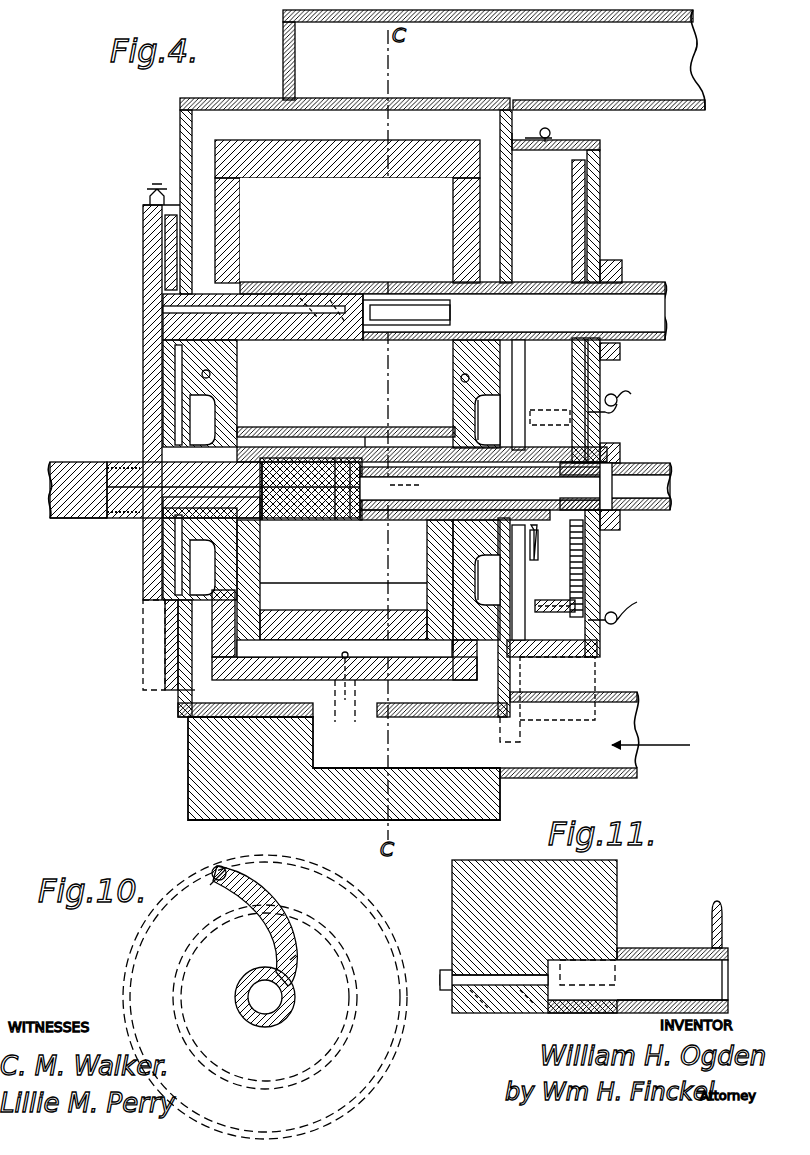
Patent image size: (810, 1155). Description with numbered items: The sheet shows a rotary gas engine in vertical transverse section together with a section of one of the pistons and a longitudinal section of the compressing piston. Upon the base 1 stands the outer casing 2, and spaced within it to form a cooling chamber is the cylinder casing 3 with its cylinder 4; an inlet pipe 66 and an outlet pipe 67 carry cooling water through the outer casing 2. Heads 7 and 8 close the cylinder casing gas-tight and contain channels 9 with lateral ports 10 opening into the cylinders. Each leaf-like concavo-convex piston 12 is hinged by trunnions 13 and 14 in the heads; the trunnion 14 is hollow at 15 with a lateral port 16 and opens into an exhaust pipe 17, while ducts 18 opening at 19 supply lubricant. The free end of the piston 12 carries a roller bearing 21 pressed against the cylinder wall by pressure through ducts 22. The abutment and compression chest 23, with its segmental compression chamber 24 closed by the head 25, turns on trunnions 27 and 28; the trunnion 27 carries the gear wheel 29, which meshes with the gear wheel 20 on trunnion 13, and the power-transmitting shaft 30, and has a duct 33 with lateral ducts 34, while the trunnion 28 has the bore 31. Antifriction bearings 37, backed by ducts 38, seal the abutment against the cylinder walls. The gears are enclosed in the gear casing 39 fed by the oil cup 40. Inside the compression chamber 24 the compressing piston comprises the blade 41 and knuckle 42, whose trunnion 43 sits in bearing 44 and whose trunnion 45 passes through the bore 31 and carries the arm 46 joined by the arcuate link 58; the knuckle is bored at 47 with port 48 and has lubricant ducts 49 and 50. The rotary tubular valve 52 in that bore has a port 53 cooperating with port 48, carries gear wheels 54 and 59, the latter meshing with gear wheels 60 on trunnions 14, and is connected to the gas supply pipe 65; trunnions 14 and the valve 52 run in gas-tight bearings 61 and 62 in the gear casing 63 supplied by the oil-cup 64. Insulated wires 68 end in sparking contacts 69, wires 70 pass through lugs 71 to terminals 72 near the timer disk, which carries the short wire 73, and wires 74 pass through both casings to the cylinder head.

In FIG. 4, the base 1 is at (330, 820).
In FIG. 4, the outer casing 2 is at (180, 127).
In FIG. 4, the cylinder casing 3 is at (322, 143).
In FIG. 4, the cylinder 4 is at (346, 230).
In FIG. 4, the head 7 is at (215, 632).
In FIG. 4, the head 8 is at (470, 235).
In FIG. 4, the channel 9 is at (200, 373).
In FIG. 4, the lateral port 10 is at (165, 394).
In FIG. 4, the leaf-like concavo-convex piston 12 is at (345, 428).
In FIG. 10, the leaf-like concavo-convex piston 12 is at (270, 890).
In FIG. 4, the trunnion 13 is at (175, 302).
In FIG. 4, the trunnion 14 is at (520, 282).
In FIG. 4, the hollow portion 15 is at (514, 313).
In FIG. 10, the hollow portion 15 is at (250, 1000).
In FIG. 4, the lateral port 16 is at (402, 305).
In FIG. 10, the lateral port 16 is at (292, 960).
In FIG. 4, the pipe 17 is at (640, 284).
In FIG. 4, the duct 18 is at (250, 300).
In FIG. 4, the duct opening 19 is at (300, 295).
In FIG. 4, the gear wheel 20 is at (165, 250).
In FIG. 10, the gear wheel 20 is at (265, 1006).
In FIG. 4, the roller bearing 21 is at (310, 438).
In FIG. 10, the roller bearing 21 is at (219, 866).
In FIG. 10, the duct 22 is at (215, 885).
In FIG. 4, the abutment and compression chest 23 is at (245, 590).
In FIG. 4, the segmental compression chamber 24 is at (200, 608).
In FIG. 4, the head 25 is at (578, 598).
In FIG. 4, the trunnion 27 is at (110, 480).
In FIG. 4, the trunnion 28 is at (493, 470).
In FIG. 4, the gear wheel 29 is at (170, 434).
In FIG. 4, the power-transmitting shaft 30 is at (55, 518).
In FIG. 4, the longitudinal channel 31 is at (425, 520).
In FIG. 4, the duct 33 is at (122, 500).
In FIG. 4, the lateral duct 34 is at (150, 468).
In FIG. 4, the antifriction bearing 37 is at (210, 652).
In FIG. 4, the duct 38 is at (344, 645).
In FIG. 4, the gear casing 39 is at (150, 332).
In FIG. 4, the oil cup 40 is at (148, 197).
In FIG. 4, the leaf or blade 41 is at (345, 588).
In FIG. 11, the leaf or blade 41 is at (610, 893).
In FIG. 4, the knuckle 42 is at (320, 520).
In FIG. 11, the knuckle 42 is at (478, 1013).
In FIG. 4, the trunnion 43 is at (275, 520).
In FIG. 11, the trunnion 43 is at (440, 990).
In FIG. 4, the bearing 44 is at (255, 447).
In FIG. 4, the trunnion 45 is at (590, 438).
In FIG. 11, the trunnion 45 is at (672, 1017).
In FIG. 4, the arm 46 is at (538, 550).
In FIG. 11, the arm 46 is at (722, 925).
In FIG. 4, the bore 47 is at (387, 520).
In FIG. 11, the bore 47 is at (638, 980).
In FIG. 4, the lateral port 48 is at (372, 520).
In FIG. 11, the lateral port 48 is at (583, 985).
In FIG. 4, the longitudinal duct 49 is at (340, 520).
In FIG. 11, the longitudinal duct 49 is at (450, 972).
In FIG. 4, the lateral duct 50 is at (360, 448).
In FIG. 11, the lateral duct 50 is at (510, 1012).
In FIG. 4, the rotary tubular valve 52 is at (571, 489).
In FIG. 4, the lateral port 53 is at (420, 485).
In FIG. 4, the gear wheel 54 is at (622, 450).
In FIG. 4, the arcuate link 58 is at (585, 549).
In FIG. 4, the gear wheel 59 is at (622, 516).
In FIG. 4, the gear wheel 60 is at (580, 233).
In FIG. 10, the gear wheel 60 is at (385, 1069).
In FIG. 4, the gas-tight bearing 61 is at (612, 275).
In FIG. 4, the gas-tight bearing 62 is at (672, 488).
In FIG. 4, the gear casing 63 is at (600, 193).
In FIG. 4, the oil-cup 64 is at (555, 133).
In FIG. 4, the pipe 65 is at (672, 464).
In FIG. 4, the inlet pipe 66 is at (640, 713).
In FIG. 4, the outlet pipe 67 is at (722, 70).
In FIG. 4, the insulated wire 68 is at (340, 722).
In FIG. 4, the sparking contact 69 is at (363, 676).
In FIG. 4, the insulated wire 70 is at (630, 386).
In FIG. 4, the lug 71 is at (572, 420).
In FIG. 4, the terminal 72 is at (527, 622).
In FIG. 4, the insulated wire 73 is at (525, 350).
In FIG. 4, the insulated wire 74 is at (455, 405).